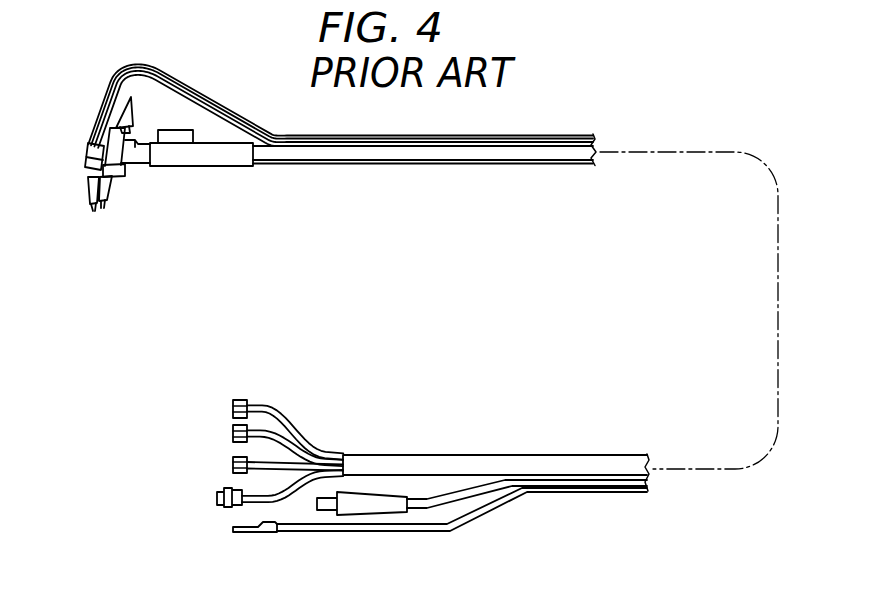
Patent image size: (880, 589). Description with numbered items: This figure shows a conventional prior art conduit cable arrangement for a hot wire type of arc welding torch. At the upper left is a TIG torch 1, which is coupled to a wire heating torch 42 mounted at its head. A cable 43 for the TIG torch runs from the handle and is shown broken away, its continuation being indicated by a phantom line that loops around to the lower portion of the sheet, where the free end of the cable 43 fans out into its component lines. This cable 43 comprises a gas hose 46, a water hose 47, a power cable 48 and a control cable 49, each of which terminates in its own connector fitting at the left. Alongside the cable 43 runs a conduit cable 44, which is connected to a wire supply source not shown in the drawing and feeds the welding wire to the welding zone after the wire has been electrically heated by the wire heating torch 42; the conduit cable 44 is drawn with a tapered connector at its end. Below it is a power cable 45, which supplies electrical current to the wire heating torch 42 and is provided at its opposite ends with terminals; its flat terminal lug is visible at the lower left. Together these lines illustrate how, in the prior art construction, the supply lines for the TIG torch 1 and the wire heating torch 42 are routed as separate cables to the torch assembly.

The TIG torch 1 is at (205, 163).
The wire heating torch 42 is at (87, 159).
The cable 43 is at (368, 455).
The conduit cable 44 is at (372, 506).
The power cable 45 is at (293, 534).
The gas hose 46 is at (240, 400).
The water hose 47 is at (233, 433).
The power cable 48 is at (233, 464).
The control cable 49 is at (217, 498).